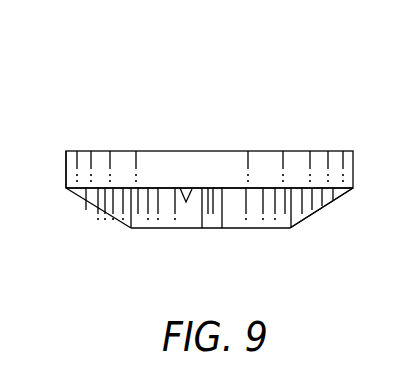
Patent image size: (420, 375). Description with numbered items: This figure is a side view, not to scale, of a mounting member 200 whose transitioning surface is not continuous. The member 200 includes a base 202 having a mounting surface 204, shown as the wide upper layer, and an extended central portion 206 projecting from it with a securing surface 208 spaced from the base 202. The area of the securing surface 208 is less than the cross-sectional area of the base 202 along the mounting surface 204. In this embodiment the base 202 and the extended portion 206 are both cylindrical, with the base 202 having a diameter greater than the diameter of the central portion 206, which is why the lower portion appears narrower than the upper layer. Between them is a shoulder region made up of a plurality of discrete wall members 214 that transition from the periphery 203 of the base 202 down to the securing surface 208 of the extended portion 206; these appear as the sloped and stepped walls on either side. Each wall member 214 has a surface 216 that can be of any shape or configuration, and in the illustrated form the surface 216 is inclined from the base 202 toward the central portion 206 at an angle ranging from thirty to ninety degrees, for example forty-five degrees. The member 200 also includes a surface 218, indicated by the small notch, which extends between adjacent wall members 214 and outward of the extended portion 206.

The mounting member 200 is at (257, 87).
The base 202 is at (118, 149).
The periphery 203 is at (66, 172).
The mounting surface 204 is at (318, 149).
The extended central portion 206 is at (302, 220).
The securing surface 208 is at (150, 230).
The discrete wall members 214 is at (92, 206).
The surface of wall member 216 is at (98, 208).
The surface between adjacent wall members 218 is at (183, 198).